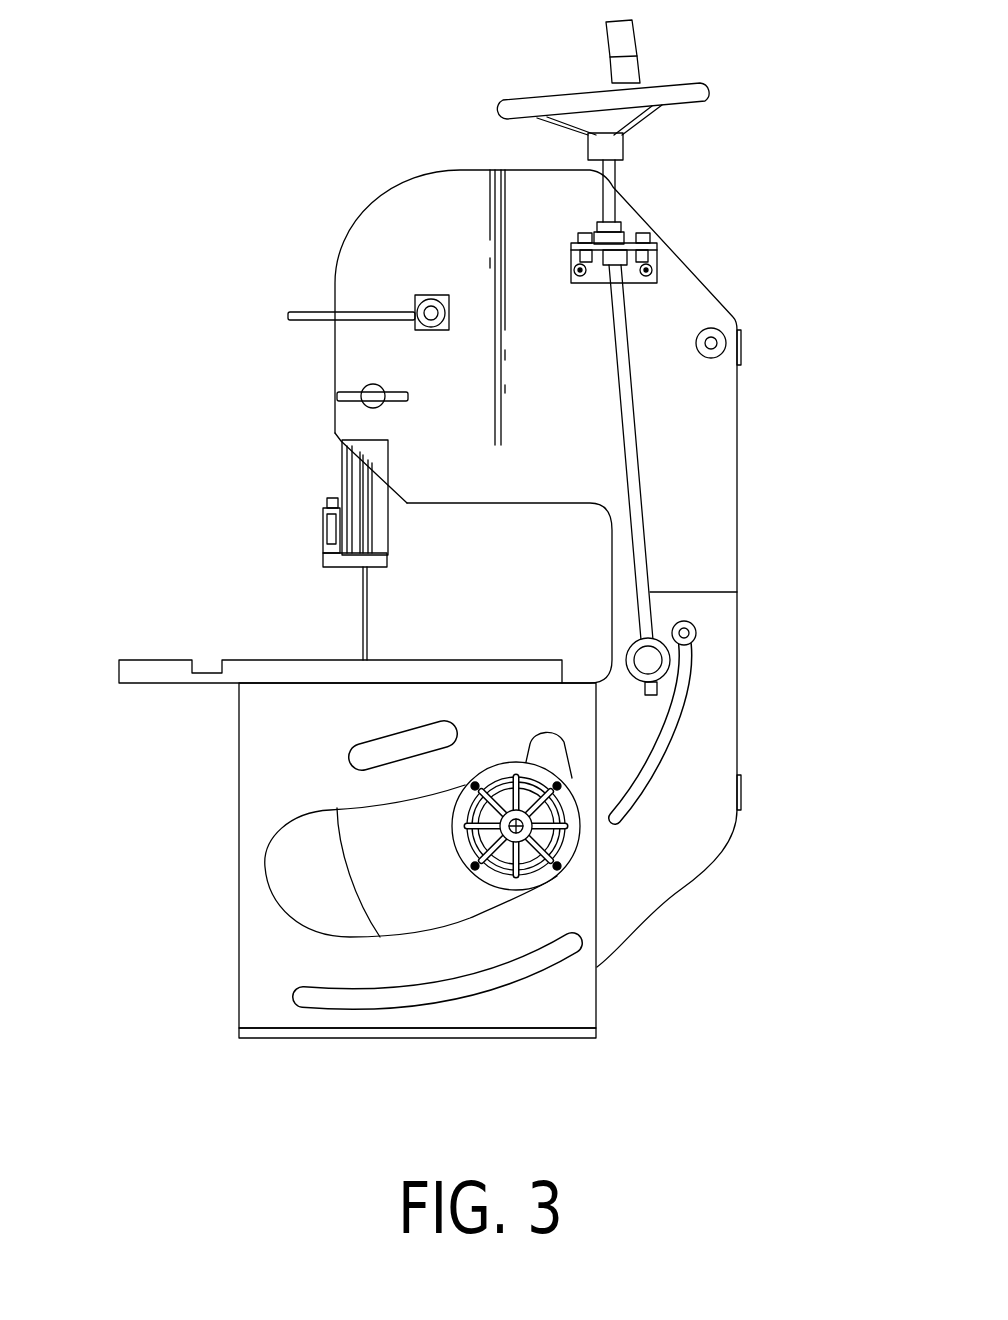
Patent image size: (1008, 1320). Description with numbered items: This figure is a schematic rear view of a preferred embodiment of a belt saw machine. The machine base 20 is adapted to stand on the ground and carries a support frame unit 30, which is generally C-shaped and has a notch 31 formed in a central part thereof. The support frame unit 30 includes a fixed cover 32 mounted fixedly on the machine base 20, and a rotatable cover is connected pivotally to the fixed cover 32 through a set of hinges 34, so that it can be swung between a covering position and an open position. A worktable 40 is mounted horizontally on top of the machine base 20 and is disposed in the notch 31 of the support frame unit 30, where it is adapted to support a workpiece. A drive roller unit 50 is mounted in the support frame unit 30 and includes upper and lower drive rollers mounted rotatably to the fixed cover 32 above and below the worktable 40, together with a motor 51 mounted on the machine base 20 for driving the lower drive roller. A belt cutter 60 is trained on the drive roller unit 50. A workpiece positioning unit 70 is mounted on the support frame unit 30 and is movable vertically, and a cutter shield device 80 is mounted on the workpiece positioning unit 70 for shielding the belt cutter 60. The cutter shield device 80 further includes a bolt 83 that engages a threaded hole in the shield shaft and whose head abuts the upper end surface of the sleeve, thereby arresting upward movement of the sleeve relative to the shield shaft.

The machine base 20 is at (239, 968).
The support frame unit 30 is at (754, 493).
The notch 31 is at (590, 602).
The fixed cover 32 is at (680, 250).
The hinges 34 is at (742, 340).
The worktable 40 is at (122, 660).
The drive roller unit 50 is at (585, 867).
The motor 51 is at (605, 822).
The belt cutter 60 is at (363, 605).
The workpiece positioning unit 70 is at (308, 557).
The cutter shield device 80 is at (404, 528).
The bolt 83 is at (330, 497).